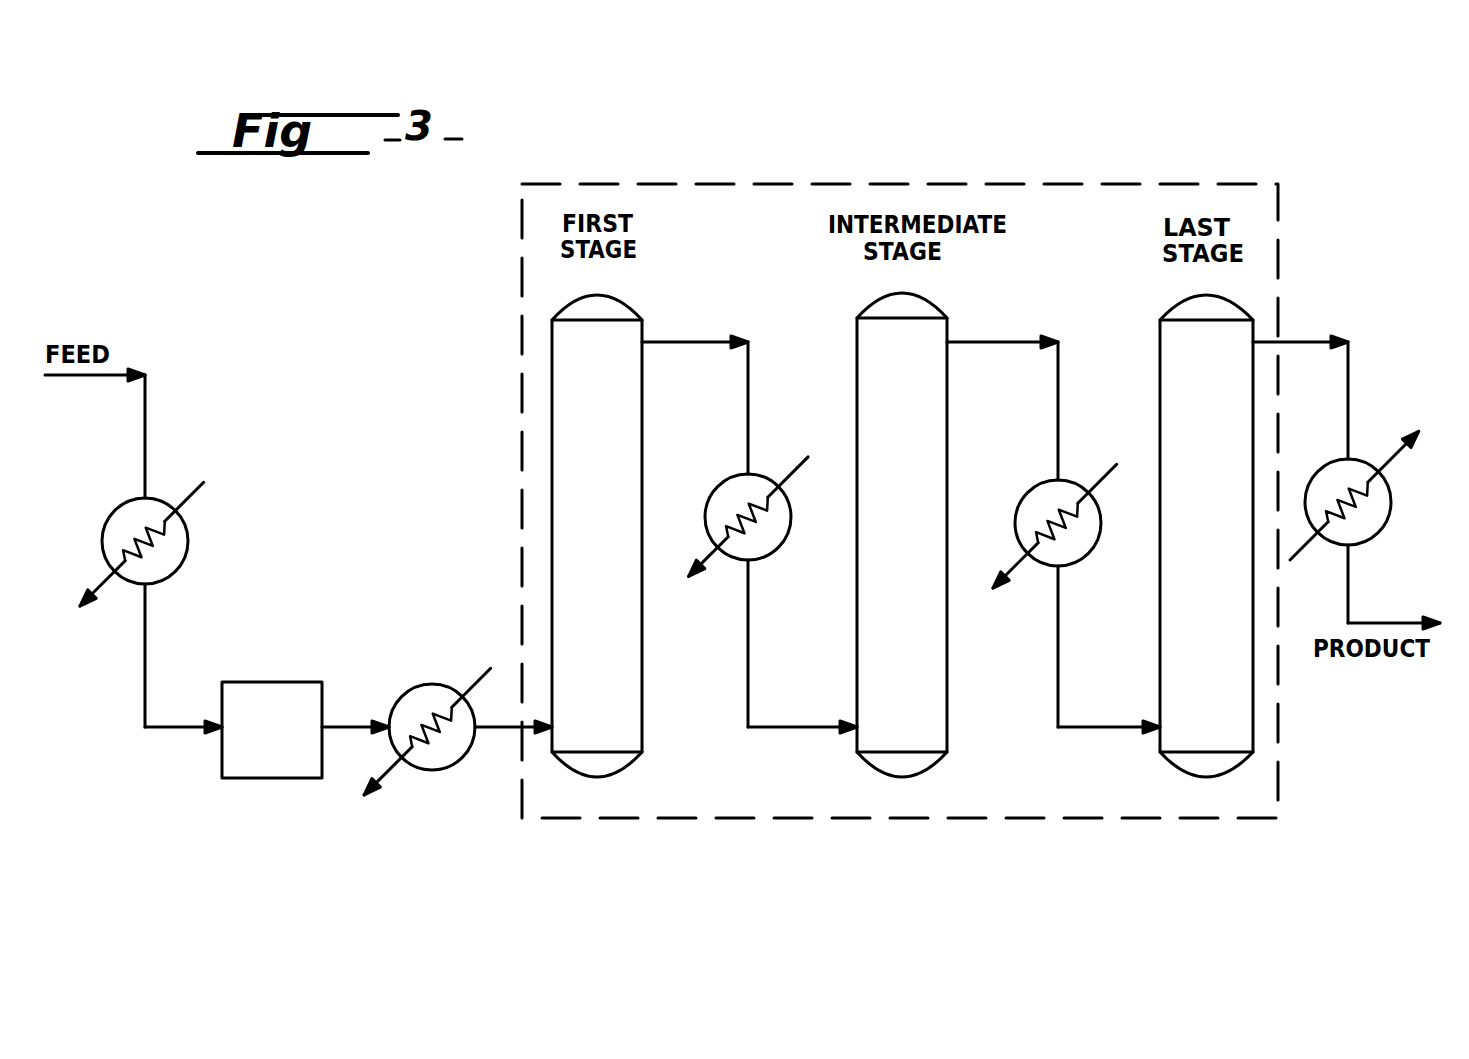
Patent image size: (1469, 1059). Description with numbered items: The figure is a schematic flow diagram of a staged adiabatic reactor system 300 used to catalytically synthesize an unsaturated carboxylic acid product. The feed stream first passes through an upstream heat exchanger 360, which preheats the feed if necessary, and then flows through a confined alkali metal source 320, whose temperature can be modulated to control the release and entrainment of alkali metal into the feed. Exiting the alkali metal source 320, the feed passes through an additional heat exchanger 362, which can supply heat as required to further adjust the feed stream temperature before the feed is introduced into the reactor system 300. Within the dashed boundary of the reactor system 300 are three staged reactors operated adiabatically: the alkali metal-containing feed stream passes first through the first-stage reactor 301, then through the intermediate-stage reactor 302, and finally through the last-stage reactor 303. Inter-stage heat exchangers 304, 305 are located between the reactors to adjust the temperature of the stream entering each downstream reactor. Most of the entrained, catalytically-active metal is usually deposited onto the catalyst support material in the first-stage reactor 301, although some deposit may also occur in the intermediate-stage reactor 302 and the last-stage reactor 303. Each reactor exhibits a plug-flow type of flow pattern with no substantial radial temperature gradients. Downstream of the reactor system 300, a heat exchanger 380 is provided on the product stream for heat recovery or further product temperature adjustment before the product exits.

The reactor system 300 is at (1283, 195).
The first-stage reactor 301 is at (607, 542).
The intermediate-stage reactor 302 is at (932, 545).
The last-stage reactor 303 is at (1232, 540).
The inter-stage heat exchanger 304 is at (735, 558).
The inter-stage heat exchanger 305 is at (1038, 568).
The alkali metal source 320 is at (275, 682).
The upstream heat exchanger 360 is at (188, 553).
The heat exchanger 362 is at (421, 686).
The heat exchanger 380 is at (1390, 500).